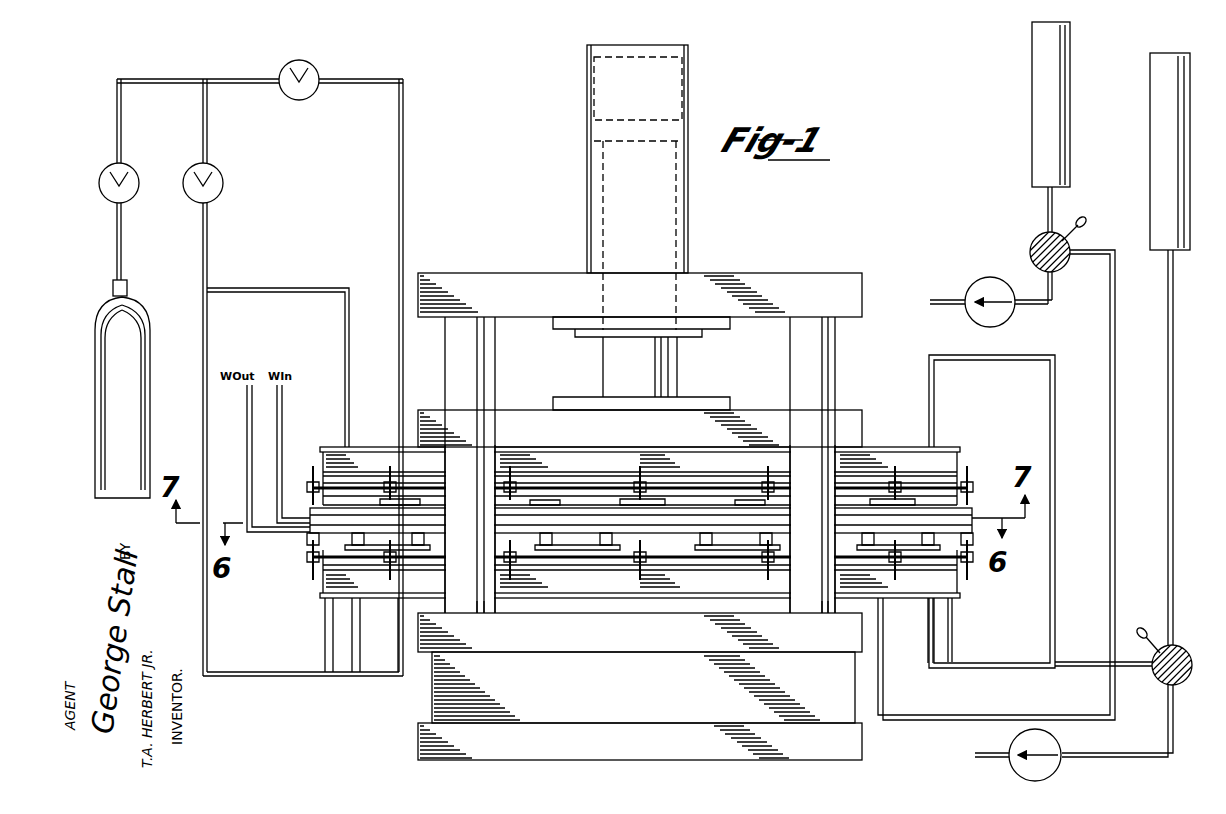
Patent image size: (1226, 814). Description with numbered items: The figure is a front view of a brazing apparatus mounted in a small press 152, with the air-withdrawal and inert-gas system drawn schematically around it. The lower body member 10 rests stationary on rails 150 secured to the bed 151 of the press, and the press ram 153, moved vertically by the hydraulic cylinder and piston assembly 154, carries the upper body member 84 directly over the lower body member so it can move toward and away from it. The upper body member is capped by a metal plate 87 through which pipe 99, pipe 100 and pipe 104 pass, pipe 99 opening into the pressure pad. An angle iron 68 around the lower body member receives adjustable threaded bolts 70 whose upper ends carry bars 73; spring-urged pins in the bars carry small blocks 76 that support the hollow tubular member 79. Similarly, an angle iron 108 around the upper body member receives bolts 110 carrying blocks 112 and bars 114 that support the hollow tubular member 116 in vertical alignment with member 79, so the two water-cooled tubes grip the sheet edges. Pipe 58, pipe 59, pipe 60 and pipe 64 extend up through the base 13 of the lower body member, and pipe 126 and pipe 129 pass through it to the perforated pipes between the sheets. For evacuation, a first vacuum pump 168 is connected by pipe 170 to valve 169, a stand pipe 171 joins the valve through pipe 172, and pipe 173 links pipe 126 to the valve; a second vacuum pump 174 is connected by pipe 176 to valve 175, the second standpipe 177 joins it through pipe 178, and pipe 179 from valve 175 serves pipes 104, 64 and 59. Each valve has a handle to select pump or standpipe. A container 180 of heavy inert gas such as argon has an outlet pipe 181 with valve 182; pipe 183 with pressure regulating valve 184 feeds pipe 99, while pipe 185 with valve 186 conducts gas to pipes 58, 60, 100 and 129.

The lower body member 10 is at (659, 512).
The base 13 is at (960, 596).
The pipe 58 is at (360, 618).
The pipe 59 is at (925, 622).
The pipe 60 is at (333, 625).
The pipe 64 is at (950, 633).
The angle iron 68 is at (718, 566).
The threaded bolt 70 is at (636, 572).
The bar 73 is at (722, 541).
The small block 76 is at (598, 538).
The hollow tubular member 79 is at (693, 542).
The upper body member 84 is at (962, 458).
The metal plate 87 is at (938, 446).
The pipe 99 is at (404, 190).
The pipe 100 is at (318, 273).
The pipe 104 is at (1064, 518).
The angle iron 108 is at (724, 480).
The threaded bolt 110 is at (975, 470).
The block 112 is at (634, 501).
The bar 114 is at (668, 505).
The hollow tubular member 116 is at (708, 505).
The pipe 126 is at (1027, 707).
The pipe 129 is at (399, 645).
The rails 150 is at (558, 613).
The bed 151 is at (440, 690).
The press 152 is at (866, 290).
The ram 153 is at (866, 420).
The hydraulic cylinder and piston assembly 154 is at (587, 138).
The first vacuum pump 168 is at (981, 278).
The valve 169 is at (1032, 243).
The pipe 170 is at (1055, 296).
The stand pipe 171 is at (1032, 110).
The pipe 172 is at (1047, 205).
The pipe 173 is at (1110, 328).
The second vacuum pump 174 is at (1060, 770).
The valve 175 is at (1158, 682).
The pipe 176 is at (1175, 733).
The second standpipe 177 is at (1150, 143).
The pipe 178 is at (1175, 325).
The pipe 179 is at (1070, 663).
The container 180 is at (150, 360).
The outlet pipe 181 is at (130, 237).
The valve 182 is at (134, 172).
The pipe 183 is at (165, 80).
The pressure regulating valve 184 is at (316, 72).
The pipe 185 is at (203, 388).
The valve 186 is at (218, 172).